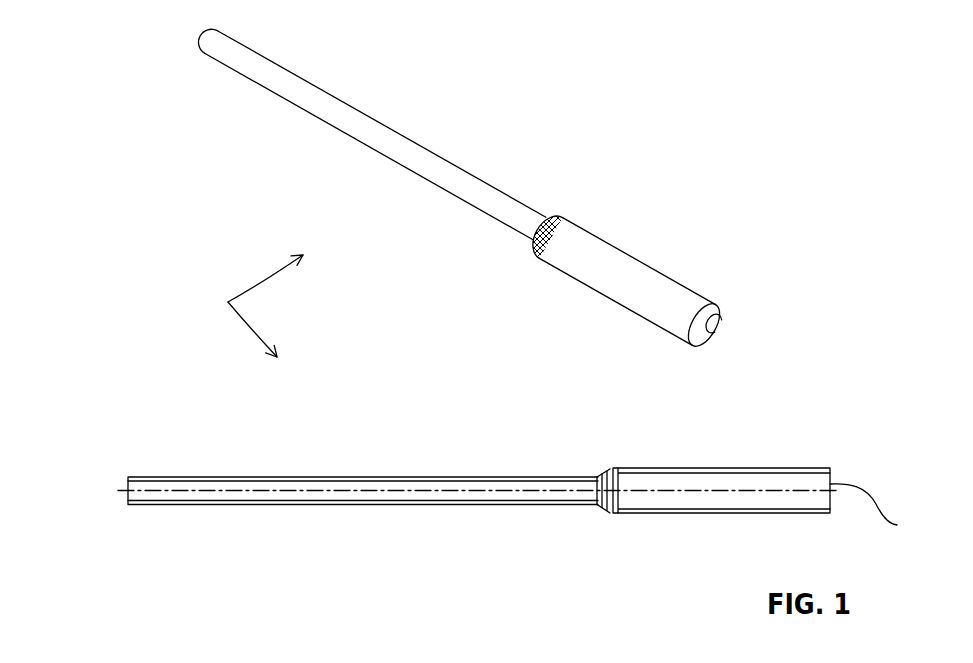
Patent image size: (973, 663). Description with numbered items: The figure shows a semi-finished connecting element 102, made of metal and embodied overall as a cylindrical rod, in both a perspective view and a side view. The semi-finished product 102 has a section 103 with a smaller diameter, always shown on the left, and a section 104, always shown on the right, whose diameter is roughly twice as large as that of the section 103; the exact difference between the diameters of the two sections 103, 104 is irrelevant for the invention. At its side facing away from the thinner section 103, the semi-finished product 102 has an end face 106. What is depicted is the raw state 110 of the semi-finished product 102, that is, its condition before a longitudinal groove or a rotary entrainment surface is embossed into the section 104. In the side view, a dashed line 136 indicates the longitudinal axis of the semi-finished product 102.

The semi-finished connecting element 102 is at (660, 271).
The section having a smaller diameter 103 is at (424, 160).
The section 104 is at (583, 260).
The end face 106 is at (722, 328).
The raw state 110 is at (227, 306).
The dashed line 136 is at (231, 491).